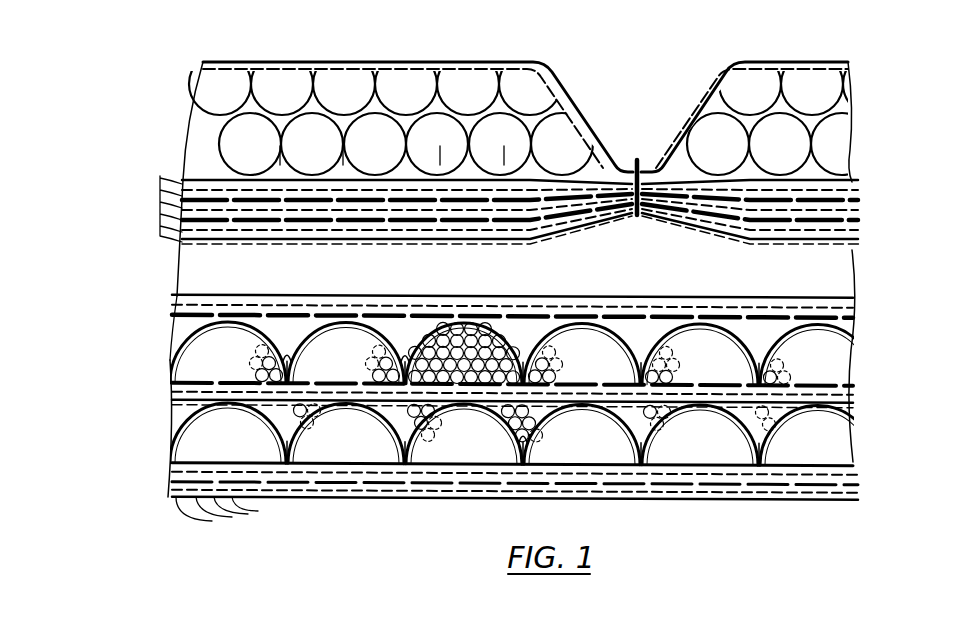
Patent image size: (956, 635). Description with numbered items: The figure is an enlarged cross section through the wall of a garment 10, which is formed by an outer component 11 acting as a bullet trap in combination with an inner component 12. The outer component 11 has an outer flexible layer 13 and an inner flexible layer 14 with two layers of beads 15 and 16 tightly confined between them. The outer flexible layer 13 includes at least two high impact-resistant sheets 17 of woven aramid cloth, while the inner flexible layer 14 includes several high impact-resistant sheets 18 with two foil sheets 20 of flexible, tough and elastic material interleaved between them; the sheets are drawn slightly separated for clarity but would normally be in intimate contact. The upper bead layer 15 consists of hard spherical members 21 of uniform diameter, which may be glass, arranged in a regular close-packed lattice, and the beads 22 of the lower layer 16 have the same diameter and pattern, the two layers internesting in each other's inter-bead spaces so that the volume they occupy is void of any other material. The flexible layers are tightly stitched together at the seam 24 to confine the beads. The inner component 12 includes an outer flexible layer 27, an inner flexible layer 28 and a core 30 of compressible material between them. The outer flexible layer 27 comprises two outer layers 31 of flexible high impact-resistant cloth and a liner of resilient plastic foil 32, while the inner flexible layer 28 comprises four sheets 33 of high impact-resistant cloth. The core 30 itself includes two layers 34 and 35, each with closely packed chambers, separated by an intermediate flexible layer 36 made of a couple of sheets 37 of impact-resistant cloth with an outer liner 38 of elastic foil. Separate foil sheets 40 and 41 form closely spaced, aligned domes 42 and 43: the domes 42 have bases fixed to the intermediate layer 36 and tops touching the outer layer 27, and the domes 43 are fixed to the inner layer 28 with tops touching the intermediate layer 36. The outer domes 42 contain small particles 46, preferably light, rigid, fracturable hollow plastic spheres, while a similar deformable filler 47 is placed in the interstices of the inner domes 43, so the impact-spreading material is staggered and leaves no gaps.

The wall of a garment 10 is at (140, 271).
The outer component 11 is at (160, 119).
The inner component 12 is at (118, 406).
The outer flexible layer 13 is at (490, 50).
The inner flexible layer 14 is at (383, 250).
The outer layer of beads 15 is at (518, 93).
The inner layer of beads 16 is at (567, 138).
The high impact-resistant sheets 17 is at (203, 66).
The high impact-resistant sheets 18 is at (178, 180).
The foil sheets 20 is at (252, 245).
The hard spherical members 21 is at (401, 90).
The beads 22 is at (541, 247).
The seam 24 is at (637, 160).
The outer flexible layer 27 is at (160, 301).
The inner flexible layer 28 is at (157, 479).
The core of compressible material 30 is at (157, 399).
The outer layers of flexible high impact-resistant material 31 is at (598, 302).
The LEXAN foil liner 32 is at (760, 297).
The sheets of high impact-resistant material 33 is at (248, 514).
The layer of compressible core 34 is at (145, 366).
The layer of compressible core 35 is at (152, 449).
The intermediate flexible layer 36 is at (153, 385).
The sheets of high impact-resistant material 37 is at (233, 408).
The outer liner 38 is at (318, 352).
The sheet of flexible, tough elastic material 40 is at (293, 297).
The sheet of flexible, tough elastic material 41 is at (518, 474).
The outer domes 42 is at (655, 300).
The inner domes 43 is at (714, 505).
The small particles 46 is at (656, 355).
The particulate filler 47 is at (552, 404).